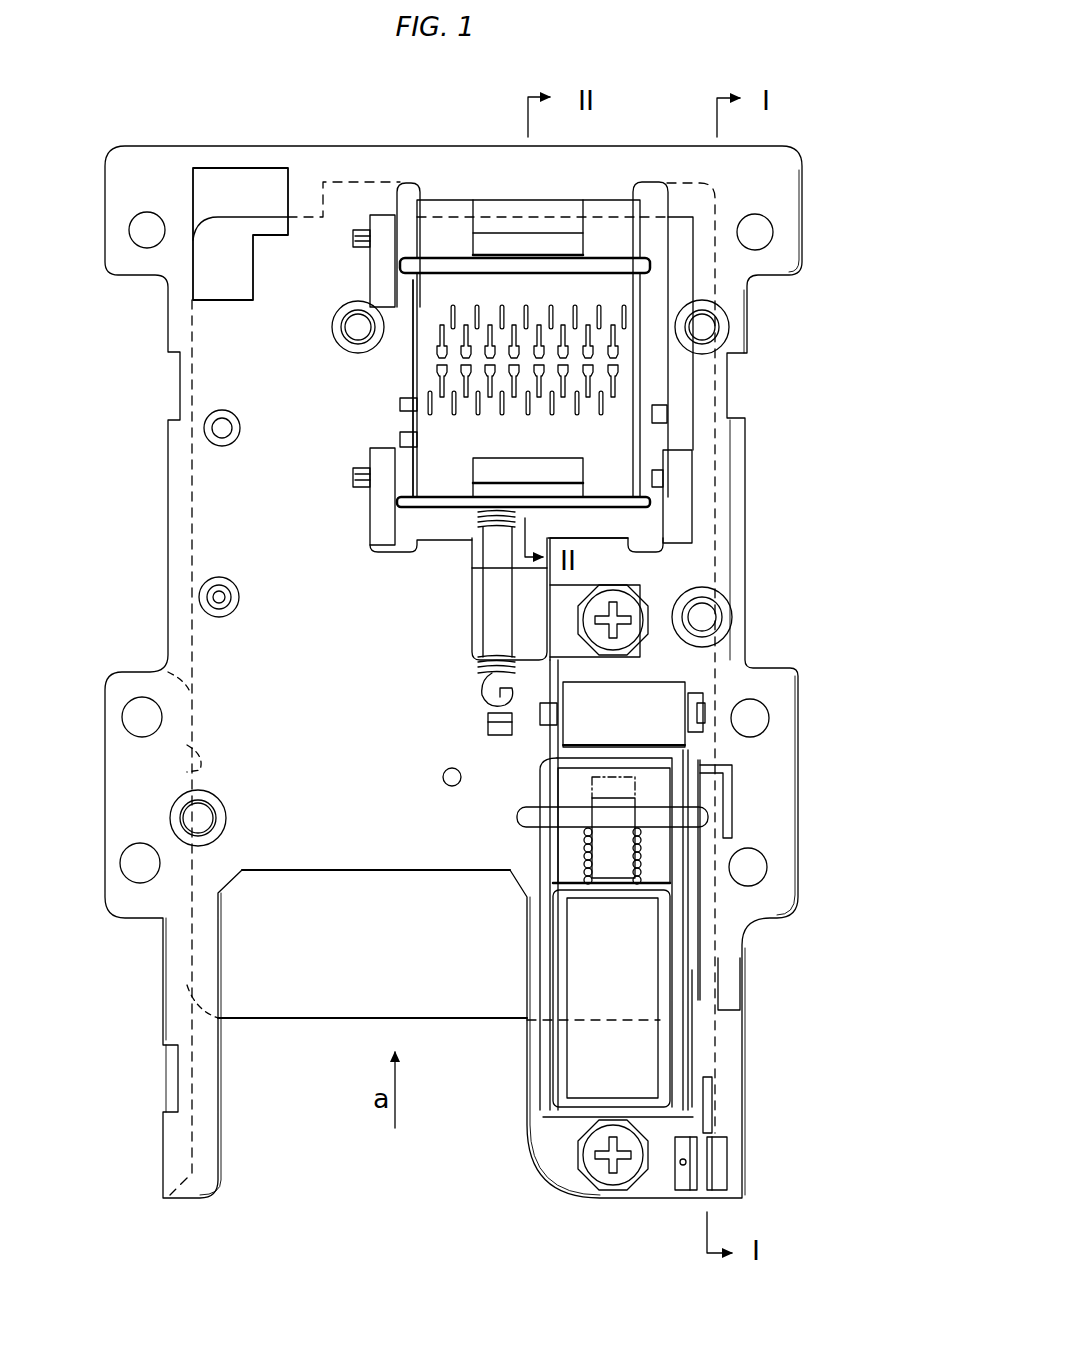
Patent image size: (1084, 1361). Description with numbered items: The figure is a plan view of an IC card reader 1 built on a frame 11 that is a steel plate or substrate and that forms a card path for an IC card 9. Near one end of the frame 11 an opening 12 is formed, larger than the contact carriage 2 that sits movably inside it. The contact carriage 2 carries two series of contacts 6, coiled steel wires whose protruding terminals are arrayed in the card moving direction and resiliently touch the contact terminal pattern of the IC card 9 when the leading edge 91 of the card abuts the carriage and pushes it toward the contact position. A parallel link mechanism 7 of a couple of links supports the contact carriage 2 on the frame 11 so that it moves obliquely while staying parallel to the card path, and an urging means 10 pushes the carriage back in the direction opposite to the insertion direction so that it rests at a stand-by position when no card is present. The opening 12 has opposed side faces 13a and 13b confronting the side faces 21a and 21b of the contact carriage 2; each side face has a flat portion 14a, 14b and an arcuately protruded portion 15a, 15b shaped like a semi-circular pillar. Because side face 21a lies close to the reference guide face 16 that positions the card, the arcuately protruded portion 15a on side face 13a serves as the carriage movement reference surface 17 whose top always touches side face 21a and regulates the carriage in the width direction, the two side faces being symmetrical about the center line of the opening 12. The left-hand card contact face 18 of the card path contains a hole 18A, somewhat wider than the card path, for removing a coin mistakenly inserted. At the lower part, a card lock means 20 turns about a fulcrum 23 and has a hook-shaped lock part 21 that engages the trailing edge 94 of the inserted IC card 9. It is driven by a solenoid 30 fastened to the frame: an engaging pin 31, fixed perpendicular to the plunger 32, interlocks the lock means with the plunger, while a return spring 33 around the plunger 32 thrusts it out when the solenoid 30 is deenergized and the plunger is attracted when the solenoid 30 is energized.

The IC card reader 1 is at (80, 118).
The contact carriage 2 is at (447, 480).
The contacts 6 is at (599, 307).
The parallel link mechanism 7 is at (348, 260).
The IC card 9 is at (244, 165).
The urging means 10 is at (475, 632).
The frame 11 is at (327, 858).
The opening 12 is at (656, 535).
The side face of the opening 13a is at (680, 472).
The side face of the opening 13b is at (400, 440).
The flat portion 14a is at (675, 375).
The flat portion 14b is at (380, 310).
The arcuately protruded portion 15a is at (670, 420).
The arcuately protruded portion 15b is at (410, 400).
The reference guide face 16 is at (698, 545).
The carriage movement reference surface 17 is at (630, 398).
The card contact face 18 is at (185, 770).
The hole 18A is at (168, 462).
The card lock means 20 is at (680, 950).
The lock part 21 is at (680, 1050).
The side face of the contact carriage 21a is at (640, 298).
The side face of the contact carriage 21b is at (410, 342).
The fulcrum 23 is at (527, 732).
The solenoid 30 is at (615, 990).
The engaging pin 31 is at (517, 815).
The plunger 32 is at (600, 860).
The return spring 33 is at (650, 860).
The leading edge 91 is at (497, 215).
The trailing edge 94 is at (322, 1020).